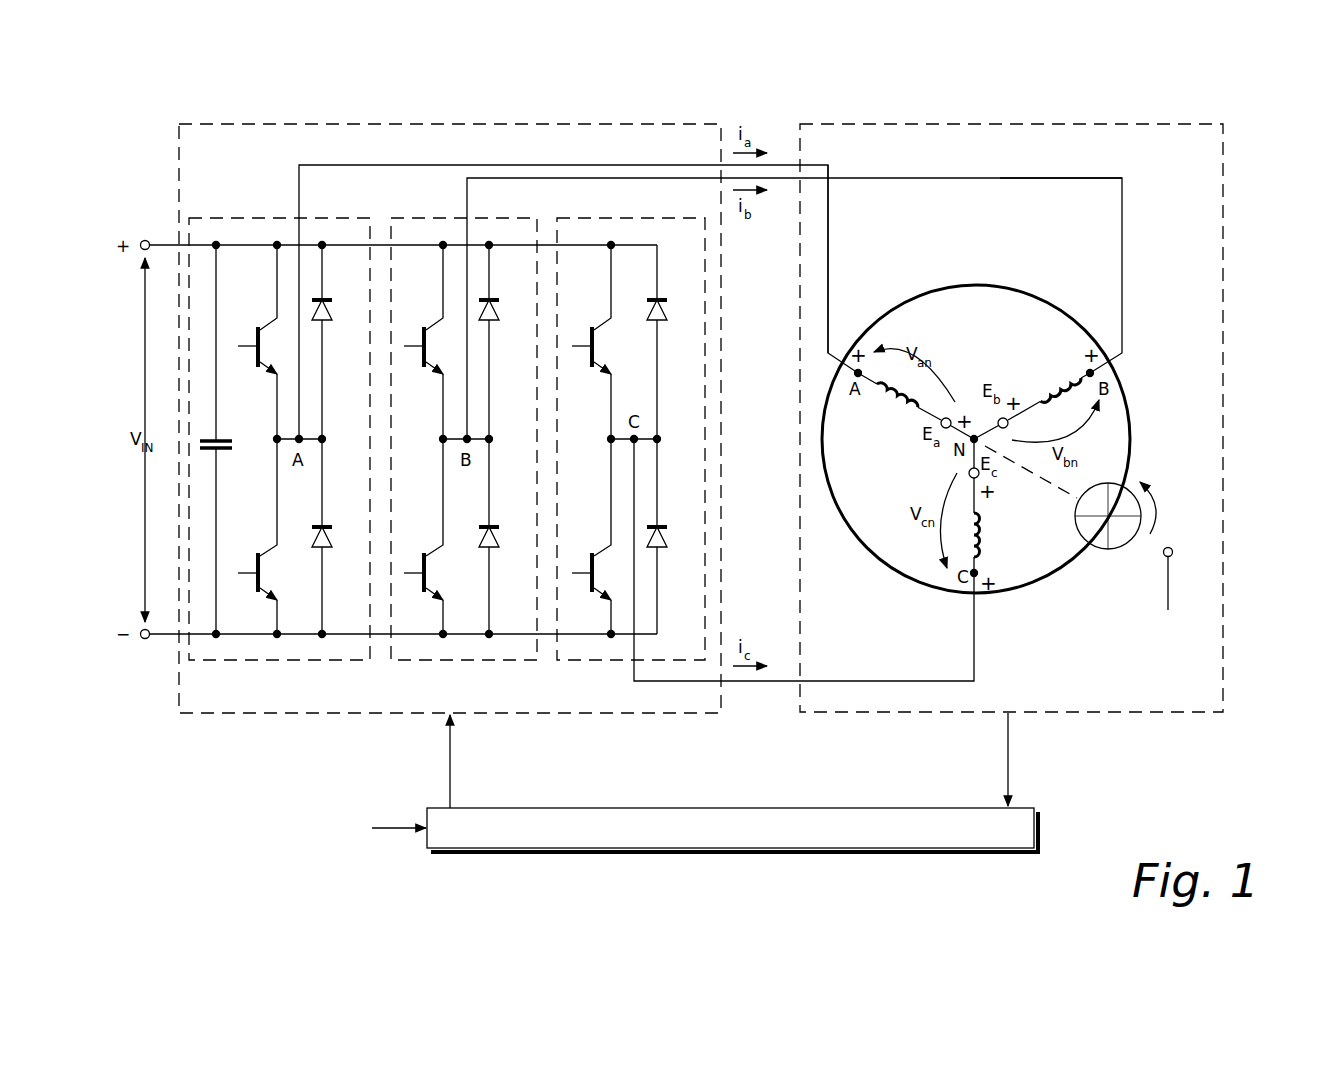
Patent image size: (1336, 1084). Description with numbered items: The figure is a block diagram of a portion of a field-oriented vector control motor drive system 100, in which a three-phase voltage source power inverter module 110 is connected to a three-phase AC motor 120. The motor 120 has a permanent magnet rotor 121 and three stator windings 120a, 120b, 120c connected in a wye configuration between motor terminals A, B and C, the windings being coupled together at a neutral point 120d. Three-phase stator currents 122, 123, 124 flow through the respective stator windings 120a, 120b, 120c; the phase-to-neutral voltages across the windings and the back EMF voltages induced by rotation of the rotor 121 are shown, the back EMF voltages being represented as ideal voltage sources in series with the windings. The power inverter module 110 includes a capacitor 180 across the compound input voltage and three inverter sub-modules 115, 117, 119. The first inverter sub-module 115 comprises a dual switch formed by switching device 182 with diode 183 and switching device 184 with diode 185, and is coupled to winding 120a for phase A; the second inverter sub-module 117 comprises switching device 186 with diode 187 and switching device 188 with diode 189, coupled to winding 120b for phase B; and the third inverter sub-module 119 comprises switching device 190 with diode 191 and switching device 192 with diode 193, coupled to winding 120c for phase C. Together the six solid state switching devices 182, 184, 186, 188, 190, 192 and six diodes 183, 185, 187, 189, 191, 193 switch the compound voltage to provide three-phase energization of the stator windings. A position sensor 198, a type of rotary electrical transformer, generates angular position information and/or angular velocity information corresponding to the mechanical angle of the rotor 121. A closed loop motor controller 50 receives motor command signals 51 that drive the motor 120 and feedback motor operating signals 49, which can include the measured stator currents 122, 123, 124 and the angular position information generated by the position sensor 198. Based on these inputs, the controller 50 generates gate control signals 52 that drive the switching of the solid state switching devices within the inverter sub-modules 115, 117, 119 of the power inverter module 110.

The motor drive system 100 is at (1242, 130).
The power inverter module 110 is at (640, 124).
The first inverter sub-module 115 is at (329, 218).
The second inverter sub-module 117 is at (496, 218).
The third inverter sub-module 119 is at (660, 218).
The three-phase AC motor 120 is at (1040, 124).
The motor winding A 120a is at (897, 406).
The motor winding B 120b is at (1055, 393).
The motor winding C 120c is at (978, 530).
The neutral point 120d is at (974, 436).
The rotor 121 is at (1108, 549).
The stator current ia 122 is at (828, 234).
The stator current ib 123 is at (903, 179).
The stator current ic 124 is at (884, 681).
The capacitor 180 is at (232, 449).
The solid state switching device 182 is at (258, 330).
The diode 183 is at (332, 300).
The solid state switching device 184 is at (258, 556).
The diode 185 is at (332, 527).
The solid state switching device 186 is at (424, 330).
The diode 187 is at (499, 300).
The solid state switching device 188 is at (424, 556).
The diode 189 is at (499, 527).
The solid state switching device 190 is at (600, 348).
The diode 191 is at (652, 300).
The solid state switching device 192 is at (593, 556).
The diode 193 is at (667, 527).
The position sensor 198 is at (1172, 548).
The motor operating signals 49 is at (1008, 766).
The closed loop motor controller 50 is at (762, 808).
The motor command signals 51 is at (294, 808).
The control signals Ga-Gf 52 is at (450, 766).